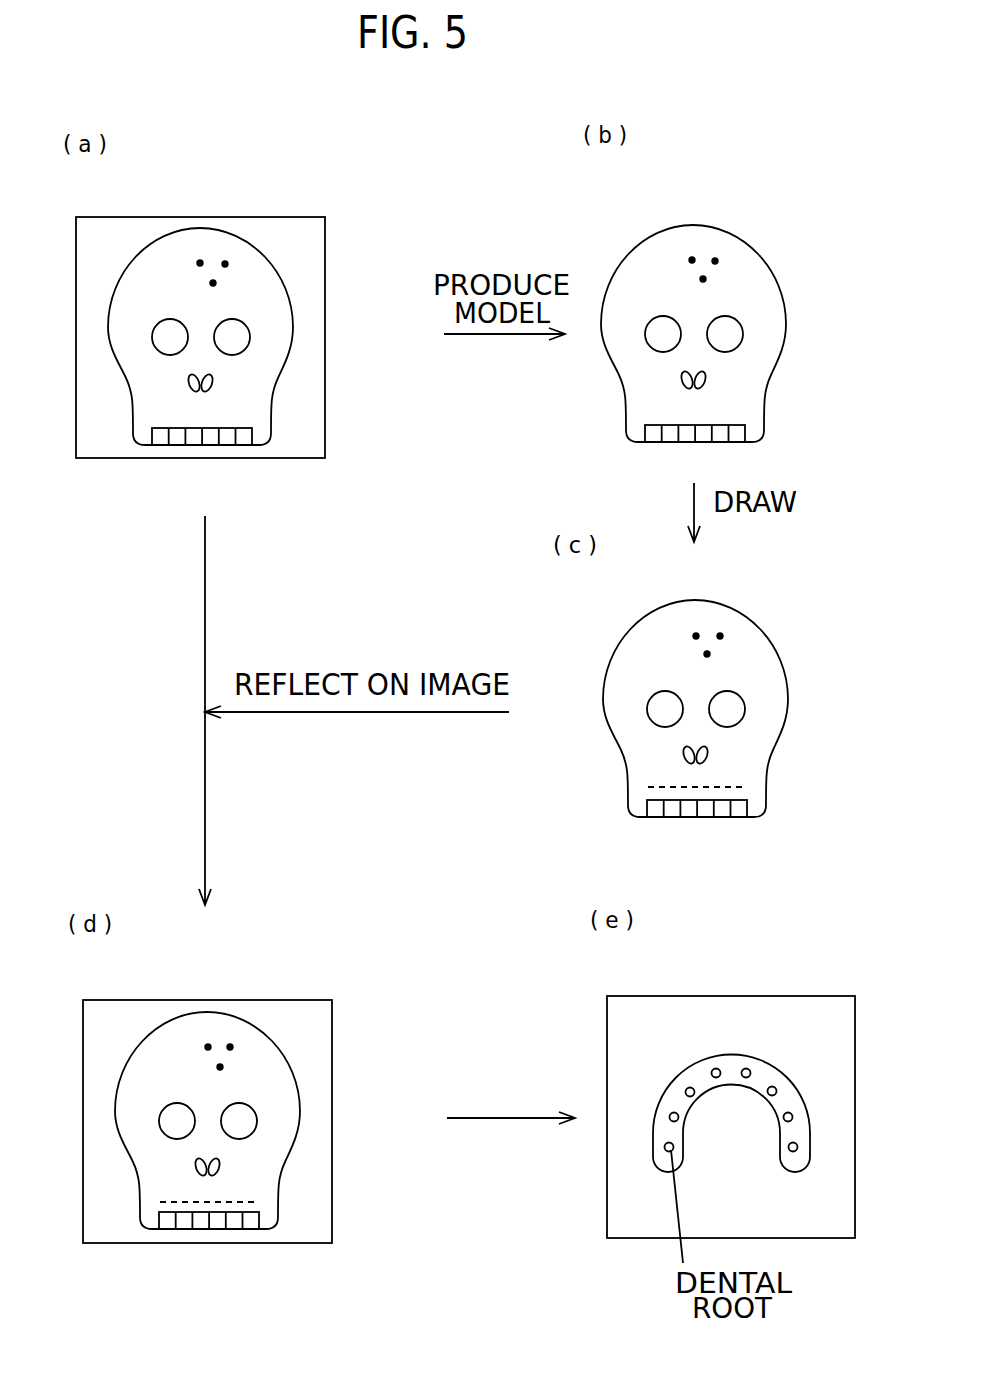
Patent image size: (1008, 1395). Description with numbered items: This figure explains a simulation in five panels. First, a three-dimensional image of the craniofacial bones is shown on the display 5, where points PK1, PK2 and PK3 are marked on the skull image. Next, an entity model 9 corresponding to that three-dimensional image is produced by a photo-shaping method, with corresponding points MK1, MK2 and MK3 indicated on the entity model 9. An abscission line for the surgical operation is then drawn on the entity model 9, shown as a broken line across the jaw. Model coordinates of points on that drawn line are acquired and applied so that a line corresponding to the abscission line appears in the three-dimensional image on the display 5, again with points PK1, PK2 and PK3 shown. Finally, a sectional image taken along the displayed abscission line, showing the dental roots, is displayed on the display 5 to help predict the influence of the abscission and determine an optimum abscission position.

The display 5 is at (260, 216).
The entity model 9 is at (732, 233).
The feature point PK1 is at (200, 263).
The feature point PK2 is at (213, 283).
The feature point PK3 is at (225, 264).
The marker point MK1 is at (692, 260).
The marker point MK2 is at (703, 279).
The marker point MK3 is at (715, 261).